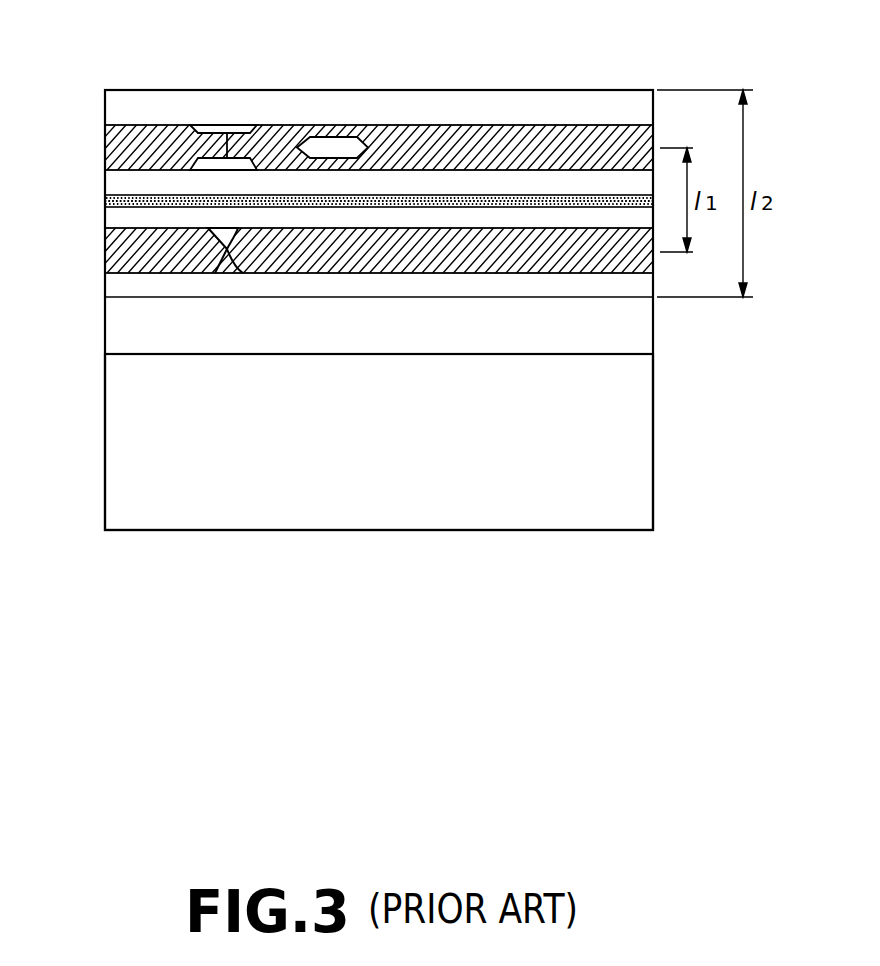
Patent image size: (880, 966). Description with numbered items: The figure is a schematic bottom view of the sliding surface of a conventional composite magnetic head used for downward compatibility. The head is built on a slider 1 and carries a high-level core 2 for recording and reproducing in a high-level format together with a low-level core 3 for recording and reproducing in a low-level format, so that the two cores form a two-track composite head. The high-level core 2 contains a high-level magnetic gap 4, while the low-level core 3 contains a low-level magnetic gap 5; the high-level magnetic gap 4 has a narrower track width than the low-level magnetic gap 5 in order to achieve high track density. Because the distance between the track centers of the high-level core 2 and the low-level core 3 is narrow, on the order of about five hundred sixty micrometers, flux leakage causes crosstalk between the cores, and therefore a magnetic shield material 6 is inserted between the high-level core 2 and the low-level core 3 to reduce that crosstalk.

The slider 1 is at (430, 520).
The high-level core 2 is at (622, 267).
The low-level core 3 is at (552, 125).
The high-level magnetic gap 4 is at (227, 270).
The low-level magnetic gap 5 is at (227, 125).
The magnetic shield material 6 is at (104, 199).